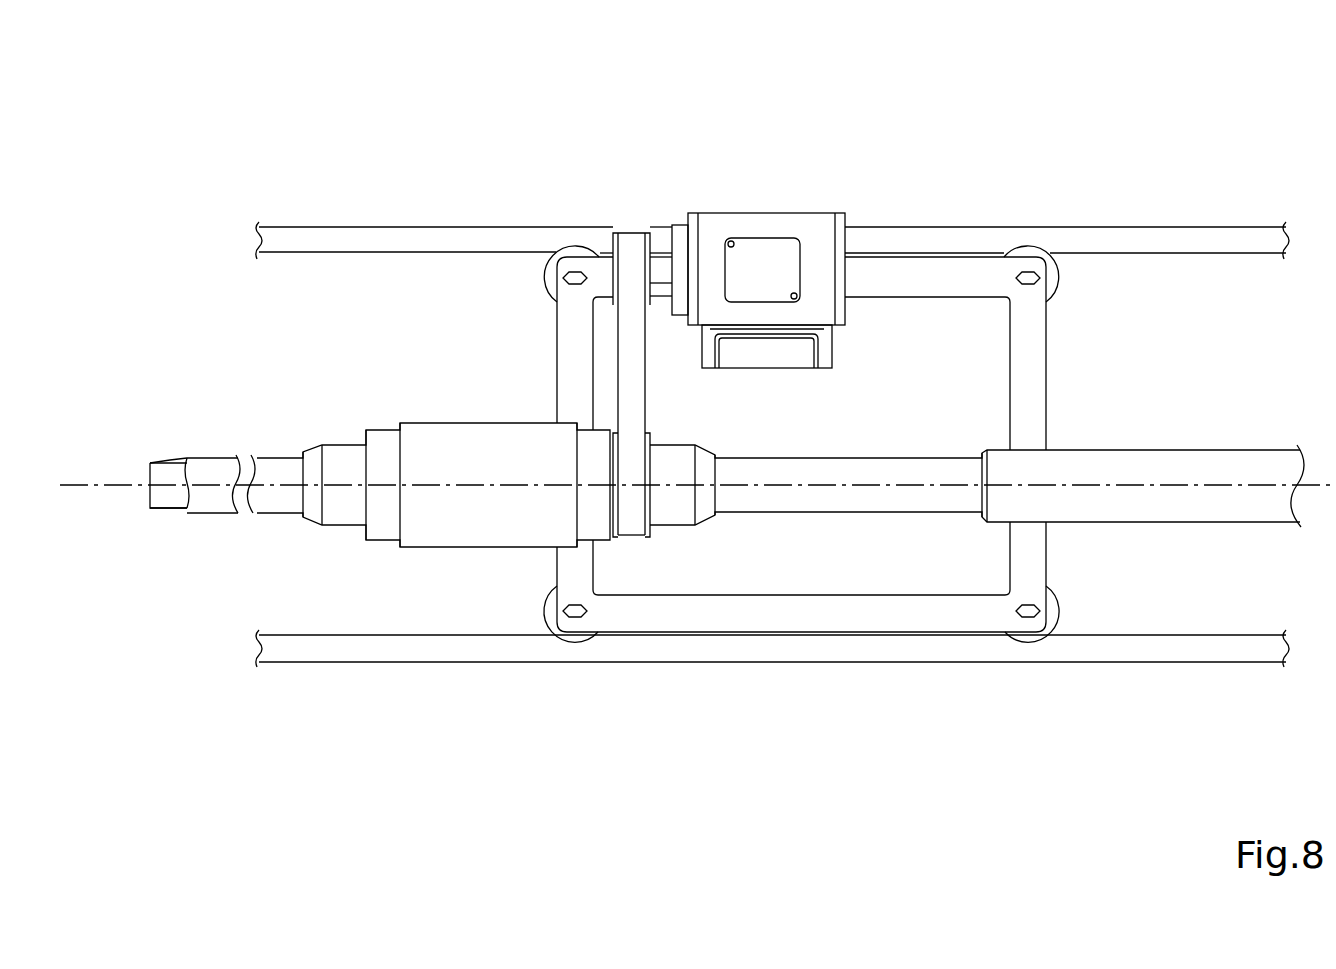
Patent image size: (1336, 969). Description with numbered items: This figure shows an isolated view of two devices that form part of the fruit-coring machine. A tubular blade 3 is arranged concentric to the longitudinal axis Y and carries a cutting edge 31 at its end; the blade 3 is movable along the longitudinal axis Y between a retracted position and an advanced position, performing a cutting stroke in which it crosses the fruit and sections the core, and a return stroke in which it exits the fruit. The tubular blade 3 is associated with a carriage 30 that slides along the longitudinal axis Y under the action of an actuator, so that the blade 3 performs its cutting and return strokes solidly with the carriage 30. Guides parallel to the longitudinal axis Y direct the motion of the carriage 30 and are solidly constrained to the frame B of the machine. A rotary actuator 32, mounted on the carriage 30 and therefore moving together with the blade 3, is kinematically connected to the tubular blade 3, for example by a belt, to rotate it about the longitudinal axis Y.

The frame B is at (365, 219).
The carriage 30 is at (921, 280).
The rotary actuator 32 is at (758, 262).
The tubular blade 3 is at (273, 470).
The cutting edge 31 is at (152, 463).
The longitudinal axis Y is at (697, 471).